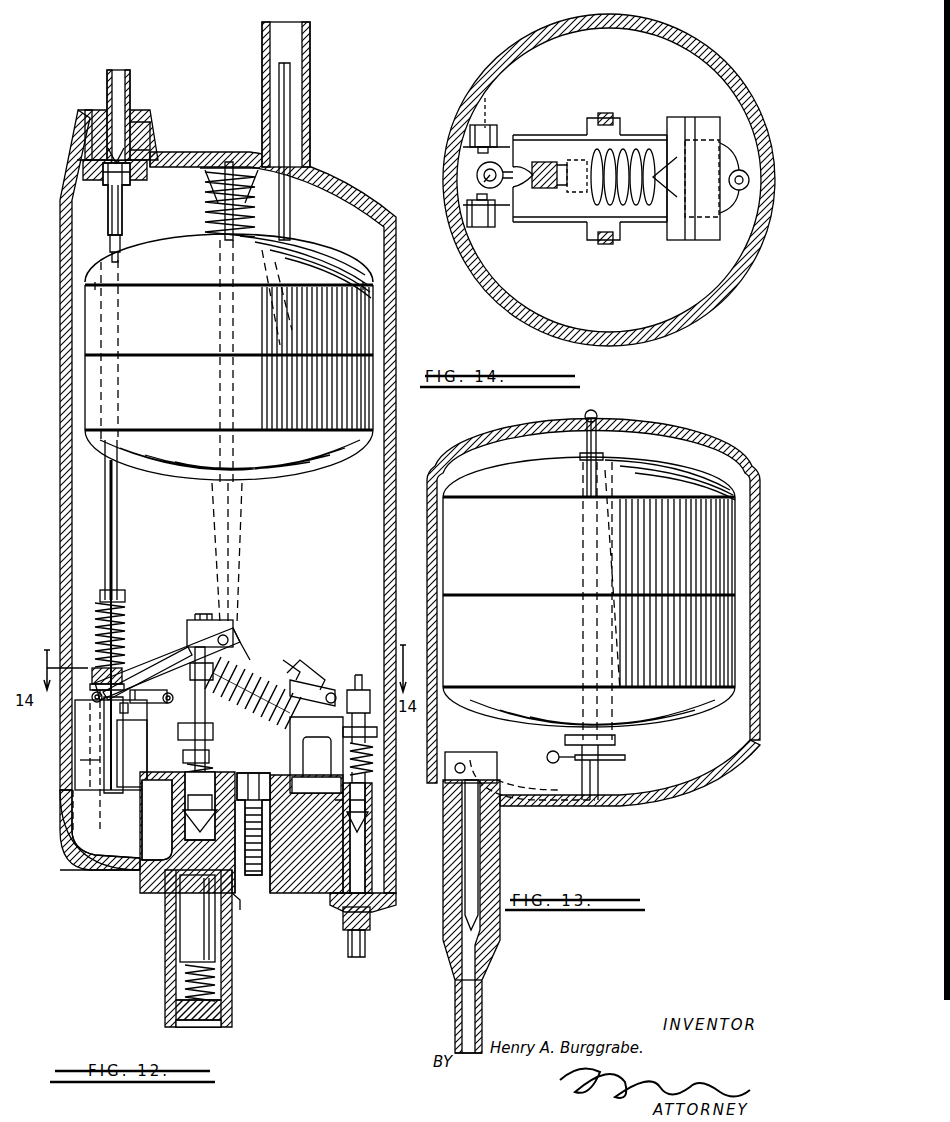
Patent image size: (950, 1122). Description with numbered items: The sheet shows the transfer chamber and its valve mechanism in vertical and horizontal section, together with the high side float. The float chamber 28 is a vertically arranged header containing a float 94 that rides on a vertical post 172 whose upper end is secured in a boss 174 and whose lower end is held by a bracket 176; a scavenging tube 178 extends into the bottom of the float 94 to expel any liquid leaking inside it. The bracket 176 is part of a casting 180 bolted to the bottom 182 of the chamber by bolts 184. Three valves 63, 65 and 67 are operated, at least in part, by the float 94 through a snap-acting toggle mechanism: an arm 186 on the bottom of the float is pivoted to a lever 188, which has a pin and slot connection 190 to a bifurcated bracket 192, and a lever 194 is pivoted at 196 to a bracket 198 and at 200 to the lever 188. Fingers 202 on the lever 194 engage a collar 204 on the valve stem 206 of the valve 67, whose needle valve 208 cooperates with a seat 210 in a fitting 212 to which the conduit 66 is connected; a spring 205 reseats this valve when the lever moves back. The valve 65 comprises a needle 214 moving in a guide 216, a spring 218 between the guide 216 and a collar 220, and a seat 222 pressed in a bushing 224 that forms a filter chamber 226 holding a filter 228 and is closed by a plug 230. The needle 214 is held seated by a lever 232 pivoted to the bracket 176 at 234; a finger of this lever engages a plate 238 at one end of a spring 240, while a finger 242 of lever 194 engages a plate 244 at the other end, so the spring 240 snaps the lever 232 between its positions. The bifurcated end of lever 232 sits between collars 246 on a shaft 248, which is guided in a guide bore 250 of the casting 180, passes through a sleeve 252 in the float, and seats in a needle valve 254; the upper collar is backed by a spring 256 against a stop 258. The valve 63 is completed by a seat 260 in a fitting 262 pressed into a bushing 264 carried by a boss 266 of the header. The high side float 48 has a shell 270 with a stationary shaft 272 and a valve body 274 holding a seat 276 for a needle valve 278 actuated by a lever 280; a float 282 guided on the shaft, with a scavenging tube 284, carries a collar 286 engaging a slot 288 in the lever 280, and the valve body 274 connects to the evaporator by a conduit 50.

In FIG. 12, the float chamber 28 is at (396, 432).
In FIG. 14, the float chamber 28 is at (755, 252).
In FIG. 13, the high side float 48 is at (700, 436).
In FIG. 13, the conduit 50 is at (485, 1020).
In FIG. 12, the valve 63 is at (162, 146).
In FIG. 12, the valve 65 is at (133, 902).
In FIG. 12, the conduit 66 is at (370, 935).
In FIG. 12, the valve 67 is at (397, 882).
In FIG. 12, the float 94 is at (305, 255).
In FIG. 12, the vertical post 172 is at (215, 230).
In FIG. 12, the boss 174 is at (212, 190).
In FIG. 12, the bracket 176 is at (148, 766).
In FIG. 14, the bracket 176 is at (550, 195).
In FIG. 12, the scavenging tube 178 is at (290, 100).
In FIG. 12, the casting 180 is at (258, 775).
In FIG. 12, the bottom 182 is at (240, 905).
In FIG. 12, the bolts 184 is at (258, 885).
In FIG. 12, the arm 186 is at (238, 548).
In FIG. 14, the arm 186 is at (606, 112).
In FIG. 12, the lever 188 is at (96, 696).
In FIG. 14, the lever 188 is at (530, 222).
In FIG. 12, the pin and slot connection 190 is at (135, 700).
In FIG. 14, the pin and slot connection 190 is at (505, 117).
In FIG. 12, the bifurcated bracket 192 is at (135, 723).
In FIG. 14, the bifurcated bracket 192 is at (470, 128).
In FIG. 12, the lever 194 is at (320, 660).
In FIG. 14, the lever 194 is at (643, 222).
In FIG. 12, the pivot 196 is at (318, 675).
In FIG. 12, the bracket 198 is at (289, 733).
In FIG. 12, the pivot 200 is at (190, 620).
In FIG. 12, the fingers 202 is at (358, 675).
In FIG. 14, the fingers 202 is at (722, 130).
In FIG. 12, the collar 204 is at (378, 732).
In FIG. 14, the collar 204 is at (742, 165).
In FIG. 12, the spring 205 is at (350, 760).
In FIG. 12, the valve stem 206 is at (378, 748).
In FIG. 14, the valve stem 206 is at (750, 180).
In FIG. 12, the needle valve 208 is at (376, 795).
In FIG. 12, the seat 210 is at (378, 820).
In FIG. 12, the fitting 212 is at (380, 848).
In FIG. 12, the needle 214 is at (160, 815).
In FIG. 12, the guide 216 is at (214, 778).
In FIG. 12, the spring 218 is at (210, 762).
In FIG. 12, the collar 220 is at (210, 754).
In FIG. 12, the seat 222 is at (145, 880).
In FIG. 12, the bushing 224 is at (165, 948).
In FIG. 12, the filter chamber 226 is at (218, 970).
In FIG. 12, the filter 228 is at (212, 952).
In FIG. 12, the plug 230 is at (215, 1027).
In FIG. 12, the lever 232 is at (100, 735).
In FIG. 14, the lever 232 is at (535, 160).
In FIG. 12, the pivot 234 is at (178, 737).
In FIG. 14, the pivot 234 is at (540, 162).
In FIG. 12, the plate 238 is at (238, 640).
In FIG. 12, the spring 240 is at (266, 712).
In FIG. 14, the spring 240 is at (625, 150).
In FIG. 12, the finger 242 is at (305, 682).
In FIG. 14, the finger 242 is at (668, 222).
In FIG. 12, the plate 244 is at (240, 665).
In FIG. 14, the plate 244 is at (655, 175).
In FIG. 12, the collar 246 is at (112, 665).
In FIG. 14, the collar 246 is at (478, 175).
In FIG. 12, the shaft 248 is at (118, 530).
In FIG. 14, the shaft 248 is at (480, 185).
In FIG. 12, the guide bore 250 is at (82, 855).
In FIG. 12, the sleeve 252 is at (125, 312).
In FIG. 12, the needle valve 254 is at (122, 188).
In FIG. 12, the spring 256 is at (108, 610).
In FIG. 12, the stop 258 is at (112, 592).
In FIG. 12, the seat 260 is at (118, 112).
In FIG. 12, the fitting 262 is at (127, 72).
In FIG. 12, the bushing 264 is at (140, 115).
In FIG. 12, the boss 266 is at (76, 130).
In FIG. 13, the shell 270 is at (752, 462).
In FIG. 13, the stationary shaft 272 is at (602, 440).
In FIG. 13, the valve body 274 is at (498, 880).
In FIG. 13, the seat 276 is at (484, 965).
In FIG. 13, the needle valve 278 is at (498, 852).
In FIG. 13, the lever 280 is at (500, 745).
In FIG. 13, the float 282 is at (700, 655).
In FIG. 13, the scavenging tube 284 is at (620, 560).
In FIG. 13, the collar 286 is at (618, 758).
In FIG. 13, the slot 288 is at (555, 750).